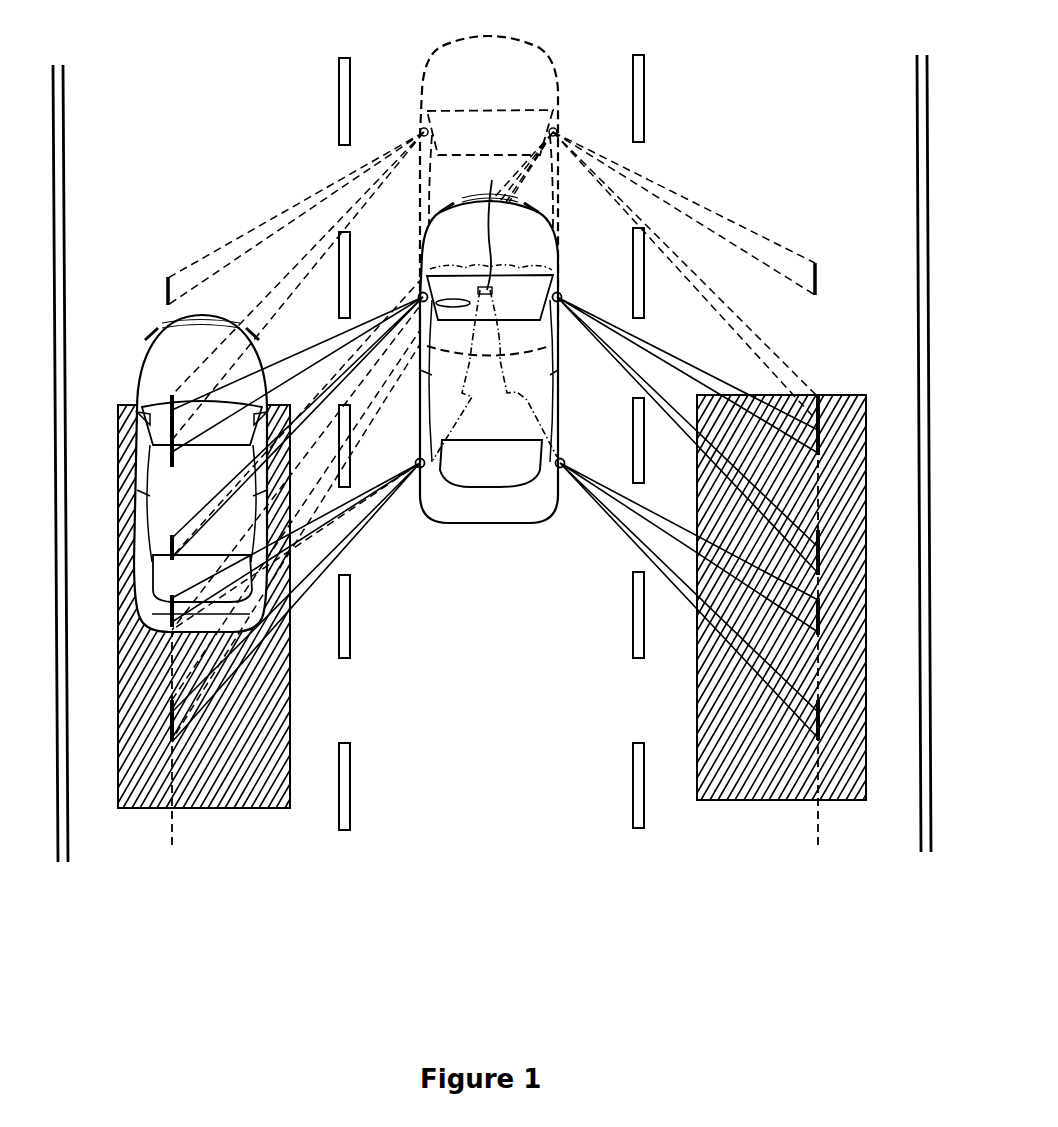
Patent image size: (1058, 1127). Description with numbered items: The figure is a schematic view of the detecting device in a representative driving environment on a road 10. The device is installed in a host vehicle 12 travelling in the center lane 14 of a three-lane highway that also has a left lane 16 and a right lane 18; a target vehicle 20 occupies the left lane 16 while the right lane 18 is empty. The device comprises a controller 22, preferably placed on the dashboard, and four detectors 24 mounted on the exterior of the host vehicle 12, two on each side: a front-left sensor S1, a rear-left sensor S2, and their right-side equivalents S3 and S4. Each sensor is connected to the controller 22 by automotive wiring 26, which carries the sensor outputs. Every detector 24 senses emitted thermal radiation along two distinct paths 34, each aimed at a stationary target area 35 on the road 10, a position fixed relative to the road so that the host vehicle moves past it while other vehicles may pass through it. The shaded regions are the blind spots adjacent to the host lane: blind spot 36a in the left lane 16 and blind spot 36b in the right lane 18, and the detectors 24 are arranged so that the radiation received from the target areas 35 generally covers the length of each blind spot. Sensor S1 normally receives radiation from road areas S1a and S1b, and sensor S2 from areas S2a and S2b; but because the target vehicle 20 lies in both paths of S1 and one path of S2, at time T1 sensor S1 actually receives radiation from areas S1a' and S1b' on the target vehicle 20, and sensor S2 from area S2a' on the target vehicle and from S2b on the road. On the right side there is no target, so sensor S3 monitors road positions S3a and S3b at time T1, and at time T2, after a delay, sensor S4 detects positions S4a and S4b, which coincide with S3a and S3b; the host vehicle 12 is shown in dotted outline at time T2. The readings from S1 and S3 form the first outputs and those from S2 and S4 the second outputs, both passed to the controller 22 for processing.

The road 10 is at (766, 145).
The host vehicle 12 is at (533, 58).
The center lane 14 is at (493, 893).
The left lane 16 is at (241, 939).
The right lane 18 is at (773, 944).
The target vehicle 20 is at (158, 340).
The controller 22 is at (489, 225).
The detectors 24 is at (392, 240).
The automotive wiring 26 is at (530, 396).
The paths 34 is at (322, 352).
The stationary target area 35 is at (110, 379).
The blind spot in left lane 36a is at (145, 768).
The blind spot in right lane 36b is at (835, 770).
The front-left sensor S1 is at (418, 295).
The rear-left sensor S2 is at (415, 460).
The front-right sensor S3 is at (562, 296).
The rear-right sensor S4 is at (565, 460).
The stationary target area S1a is at (121, 431).
The stationary target area S1b is at (121, 547).
The stationary target area S2a is at (121, 610).
The stationary target area S2b is at (168, 728).
The target area S1a' on target vehicle S1a' is at (297, 374).
The target area S1b' on target vehicle S1b' is at (297, 427).
The target area S2a' on target vehicle S2a' is at (296, 552).
The stationary target area S3a is at (822, 436).
The stationary target area S3b is at (822, 540).
The stationary target area S4a is at (822, 612).
The stationary target area S4b is at (822, 718).